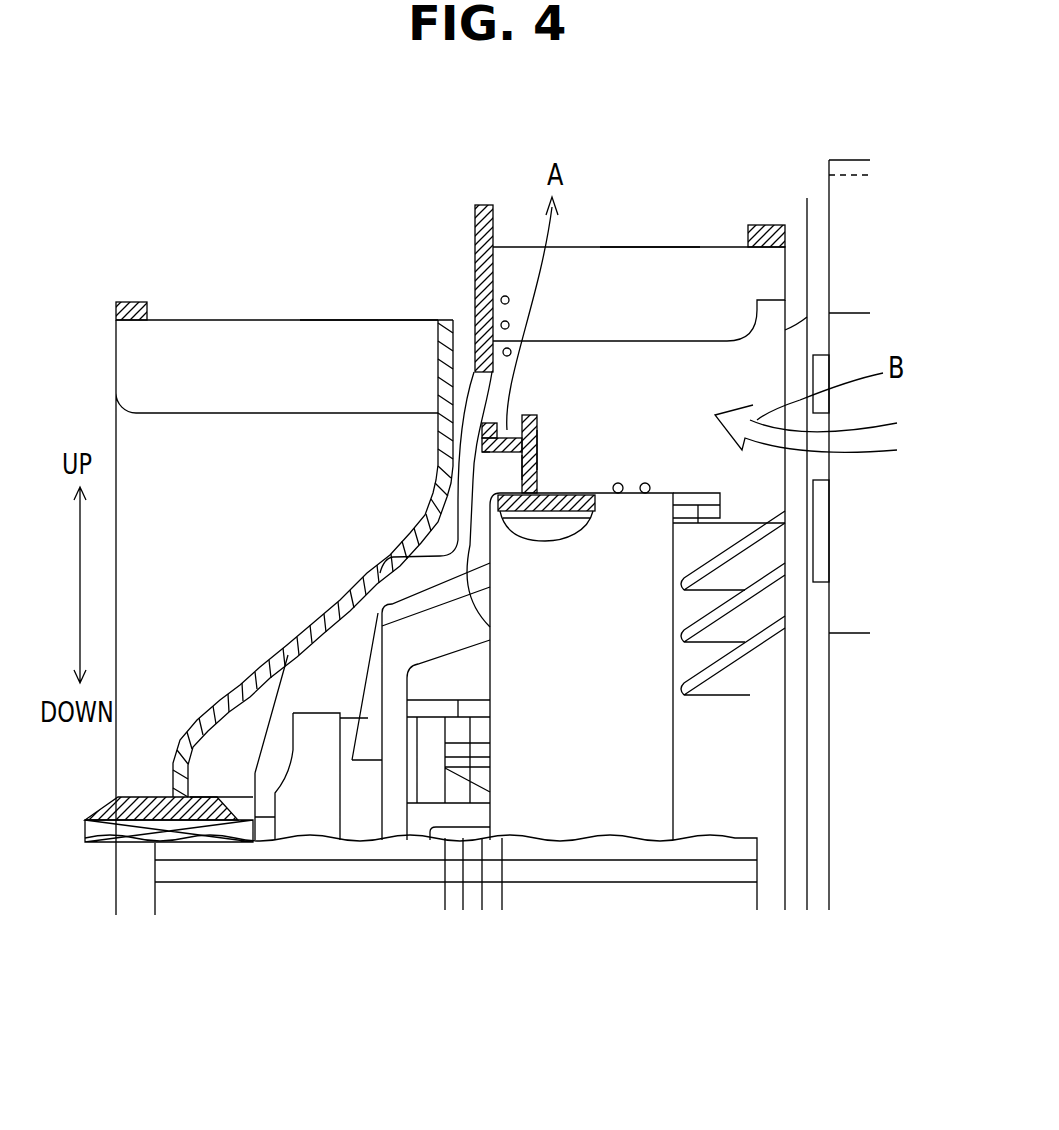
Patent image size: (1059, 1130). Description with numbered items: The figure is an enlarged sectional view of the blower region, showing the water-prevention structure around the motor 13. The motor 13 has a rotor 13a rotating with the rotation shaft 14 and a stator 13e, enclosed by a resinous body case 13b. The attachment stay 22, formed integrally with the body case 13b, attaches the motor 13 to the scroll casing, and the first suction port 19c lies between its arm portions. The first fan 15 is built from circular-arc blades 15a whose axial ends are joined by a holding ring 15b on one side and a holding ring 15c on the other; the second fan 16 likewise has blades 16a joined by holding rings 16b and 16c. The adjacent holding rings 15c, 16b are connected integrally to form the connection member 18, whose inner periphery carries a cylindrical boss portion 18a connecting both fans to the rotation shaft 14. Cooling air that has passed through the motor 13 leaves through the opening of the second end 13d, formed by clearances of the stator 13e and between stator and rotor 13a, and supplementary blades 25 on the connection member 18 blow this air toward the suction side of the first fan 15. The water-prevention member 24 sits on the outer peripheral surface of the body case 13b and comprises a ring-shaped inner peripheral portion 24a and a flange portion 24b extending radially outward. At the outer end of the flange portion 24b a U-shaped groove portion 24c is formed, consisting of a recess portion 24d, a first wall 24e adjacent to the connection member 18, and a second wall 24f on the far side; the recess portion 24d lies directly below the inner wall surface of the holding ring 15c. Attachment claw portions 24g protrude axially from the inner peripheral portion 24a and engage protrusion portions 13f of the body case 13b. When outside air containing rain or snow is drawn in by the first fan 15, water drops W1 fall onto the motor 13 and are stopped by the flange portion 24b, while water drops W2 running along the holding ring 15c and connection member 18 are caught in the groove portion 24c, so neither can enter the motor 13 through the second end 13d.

The motor 13 is at (772, 802).
The rotor 13a is at (288, 797).
The body case 13b is at (545, 518).
The second end 13d is at (480, 618).
The stator 13e is at (427, 810).
The protrusion portion 13f is at (690, 527).
The rotation shaft 14 is at (177, 833).
The first fan 15 is at (727, 247).
The blades 15a is at (698, 270).
The holding ring 15b is at (760, 225).
The holding ring 15c is at (483, 205).
The second fan 16 is at (247, 320).
The blades 16a is at (337, 342).
The holding ring 16b is at (447, 322).
The holding ring 16c is at (134, 302).
The connection member 18 is at (298, 632).
The boss portion 18a is at (140, 810).
The first suction port 19c is at (788, 356).
The attachment stay 22 is at (850, 160).
The water-prevention member 24 is at (572, 468).
The inner peripheral portion 24a is at (558, 495).
The flange portion 24b is at (563, 447).
The groove portion 24c is at (478, 467).
The recess portion 24d is at (530, 414).
The first wall 24e is at (487, 423).
The second wall 24f is at (536, 424).
The attachment claw portion 24g is at (720, 495).
The supplementary blades 25 is at (443, 523).
The water drops W1 is at (620, 493).
The water drops W2 is at (510, 293).